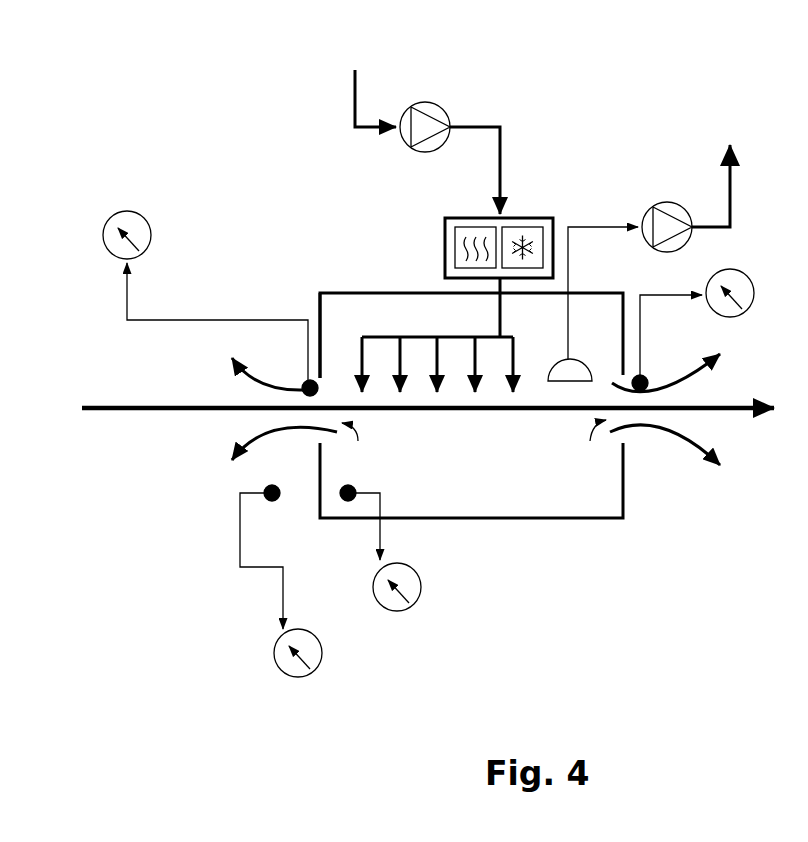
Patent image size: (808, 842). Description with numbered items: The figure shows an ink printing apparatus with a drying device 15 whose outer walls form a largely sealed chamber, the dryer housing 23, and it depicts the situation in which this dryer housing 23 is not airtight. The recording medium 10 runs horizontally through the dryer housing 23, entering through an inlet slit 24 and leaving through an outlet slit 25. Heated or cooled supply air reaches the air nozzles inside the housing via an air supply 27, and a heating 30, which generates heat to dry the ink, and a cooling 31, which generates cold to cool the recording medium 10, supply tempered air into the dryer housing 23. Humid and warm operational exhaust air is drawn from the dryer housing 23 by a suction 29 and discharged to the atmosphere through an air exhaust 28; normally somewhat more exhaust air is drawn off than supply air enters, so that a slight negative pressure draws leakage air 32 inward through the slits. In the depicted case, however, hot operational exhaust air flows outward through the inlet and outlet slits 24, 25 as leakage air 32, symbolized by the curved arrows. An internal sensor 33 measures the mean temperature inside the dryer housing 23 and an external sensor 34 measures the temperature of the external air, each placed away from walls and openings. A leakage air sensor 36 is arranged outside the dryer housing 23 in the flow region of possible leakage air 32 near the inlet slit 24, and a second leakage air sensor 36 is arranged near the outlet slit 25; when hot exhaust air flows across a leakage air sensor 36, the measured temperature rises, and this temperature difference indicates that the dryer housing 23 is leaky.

The recording medium 10 is at (455, 412).
The drying device 15 is at (562, 532).
The dryer housing 23 is at (318, 291).
The inlet slit 24 is at (358, 446).
The outlet slit 25 is at (590, 443).
The air supply 27 is at (427, 90).
The air exhaust 28 is at (663, 196).
The suction 29 is at (575, 366).
The heating 30 is at (458, 247).
The cooling 31 is at (527, 226).
The leakage air 32 is at (244, 367).
The internal sensor 33 is at (433, 578).
The external sensor 34 is at (334, 653).
The leakage air sensor 36 is at (165, 232).